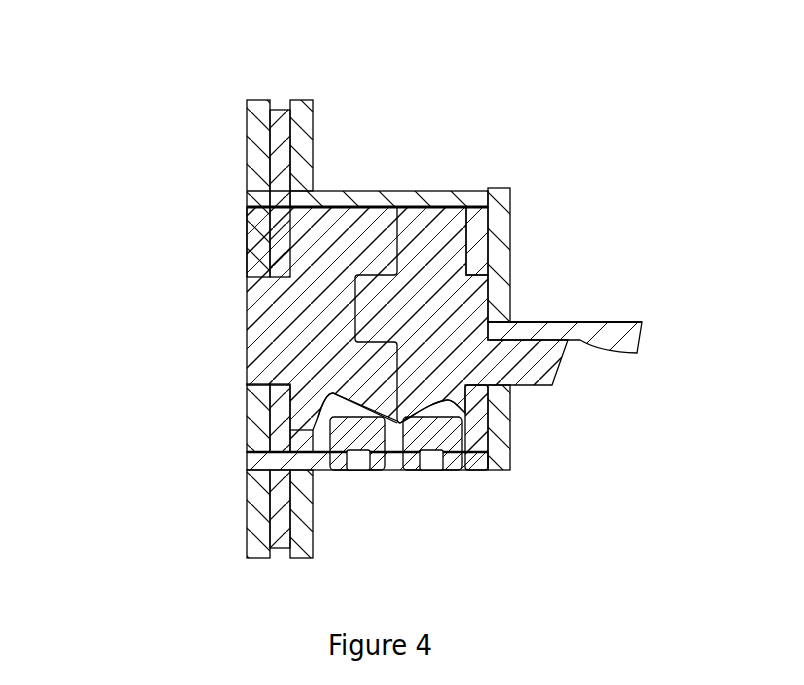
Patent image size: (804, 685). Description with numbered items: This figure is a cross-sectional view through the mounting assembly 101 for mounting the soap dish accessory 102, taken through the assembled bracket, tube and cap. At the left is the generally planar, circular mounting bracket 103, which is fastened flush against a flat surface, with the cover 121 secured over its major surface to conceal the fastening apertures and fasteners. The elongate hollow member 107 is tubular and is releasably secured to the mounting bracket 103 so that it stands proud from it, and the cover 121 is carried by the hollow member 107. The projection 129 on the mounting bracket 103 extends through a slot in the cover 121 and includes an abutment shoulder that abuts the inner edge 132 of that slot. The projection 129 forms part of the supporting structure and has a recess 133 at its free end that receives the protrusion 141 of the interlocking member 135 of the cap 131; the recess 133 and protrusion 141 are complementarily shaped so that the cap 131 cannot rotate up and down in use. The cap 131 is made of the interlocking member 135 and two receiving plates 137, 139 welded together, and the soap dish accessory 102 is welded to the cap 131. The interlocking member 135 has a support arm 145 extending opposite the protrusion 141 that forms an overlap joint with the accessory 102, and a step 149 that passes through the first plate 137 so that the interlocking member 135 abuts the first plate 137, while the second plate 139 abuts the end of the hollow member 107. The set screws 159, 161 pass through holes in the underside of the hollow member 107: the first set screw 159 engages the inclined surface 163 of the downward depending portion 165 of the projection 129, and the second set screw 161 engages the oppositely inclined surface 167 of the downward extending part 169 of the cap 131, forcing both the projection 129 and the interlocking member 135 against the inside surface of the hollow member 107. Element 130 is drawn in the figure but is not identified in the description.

The mounting assembly 101 is at (98, 98).
The soap dish accessory 102 is at (560, 332).
The mounting bracket 103 is at (266, 95).
The elongate hollow member 107 is at (405, 195).
The cover 121 is at (302, 133).
The projection 129 is at (297, 312).
The bottom plate 130 is at (310, 432).
The cap 131 is at (516, 186).
The inner edge of the slot 132 is at (300, 458).
The recess 133 is at (345, 300).
The interlocking member 135 is at (438, 300).
The first receiving plate 137 is at (497, 190).
The second receiving plate 139 is at (500, 300).
The protrusion 141 is at (338, 334).
The support arm 145 is at (538, 355).
The step 149 is at (482, 278).
The first set screw 159 is at (372, 455).
The second set screw 161 is at (430, 435).
The inclined surface 163 is at (367, 393).
The downward depending portion 165 is at (365, 420).
The oppositely inclined surface 167 is at (497, 460).
The downward extending part 169 is at (412, 398).